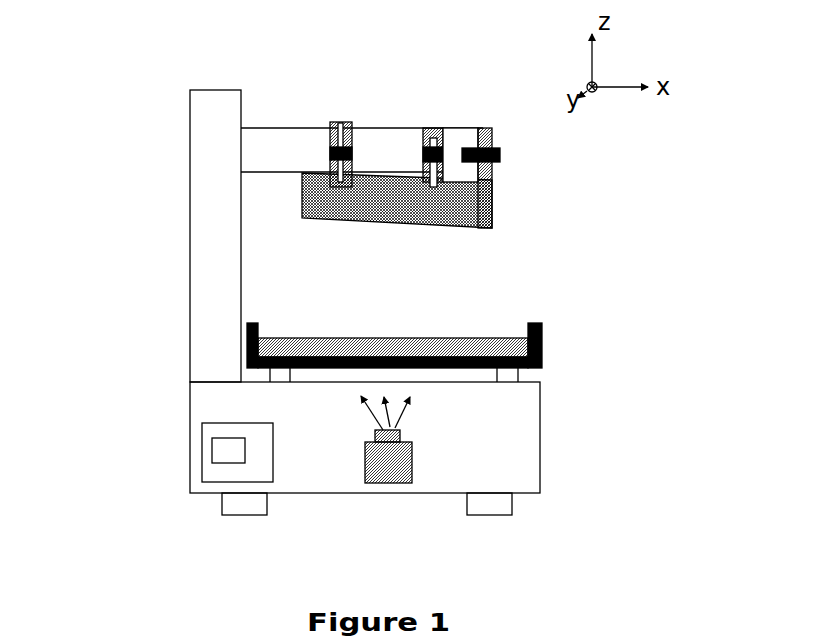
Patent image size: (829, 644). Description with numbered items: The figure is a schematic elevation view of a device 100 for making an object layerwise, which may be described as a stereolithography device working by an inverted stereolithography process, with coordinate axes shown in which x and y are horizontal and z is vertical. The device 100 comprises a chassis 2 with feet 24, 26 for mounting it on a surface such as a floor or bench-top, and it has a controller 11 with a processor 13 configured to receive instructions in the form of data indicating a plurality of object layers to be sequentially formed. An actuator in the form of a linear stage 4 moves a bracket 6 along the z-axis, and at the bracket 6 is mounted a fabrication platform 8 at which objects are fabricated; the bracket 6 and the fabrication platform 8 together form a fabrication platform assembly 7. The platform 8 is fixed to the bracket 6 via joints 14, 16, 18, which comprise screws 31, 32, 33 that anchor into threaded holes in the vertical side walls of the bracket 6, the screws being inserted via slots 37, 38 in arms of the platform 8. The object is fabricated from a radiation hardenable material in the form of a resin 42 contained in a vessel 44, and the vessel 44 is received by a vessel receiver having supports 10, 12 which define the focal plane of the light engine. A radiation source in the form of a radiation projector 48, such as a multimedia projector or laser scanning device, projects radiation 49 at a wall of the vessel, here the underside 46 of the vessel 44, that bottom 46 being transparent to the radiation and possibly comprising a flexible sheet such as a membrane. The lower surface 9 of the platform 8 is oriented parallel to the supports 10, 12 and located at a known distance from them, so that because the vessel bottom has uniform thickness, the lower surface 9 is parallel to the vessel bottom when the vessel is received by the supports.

The device 100 is at (306, 302).
The chassis 2 is at (397, 437).
The linear stage 4 is at (219, 211).
The bracket 6 is at (362, 187).
The fabrication platform assembly 7 is at (491, 177).
The fabrication platform 8 is at (425, 210).
The lower surface 9 is at (466, 267).
The support 10 is at (209, 395).
The controller 11 is at (151, 471).
The support 12 is at (566, 401).
The processor 13 is at (218, 475).
The joint 14 is at (357, 101).
The joint 16 is at (440, 101).
The joint 18 is at (493, 122).
The foot 24 is at (232, 534).
The foot 26 is at (472, 534).
The screw 31 is at (311, 102).
The screw 32 is at (406, 107).
The screw 33 is at (465, 125).
The slot 37 is at (316, 271).
The slot 38 is at (404, 279).
The resin 42 is at (401, 325).
The vessel 44 is at (435, 345).
The underside of the vessel 46 is at (291, 468).
The radiation projector 48 is at (377, 503).
The radiation 49 is at (415, 432).